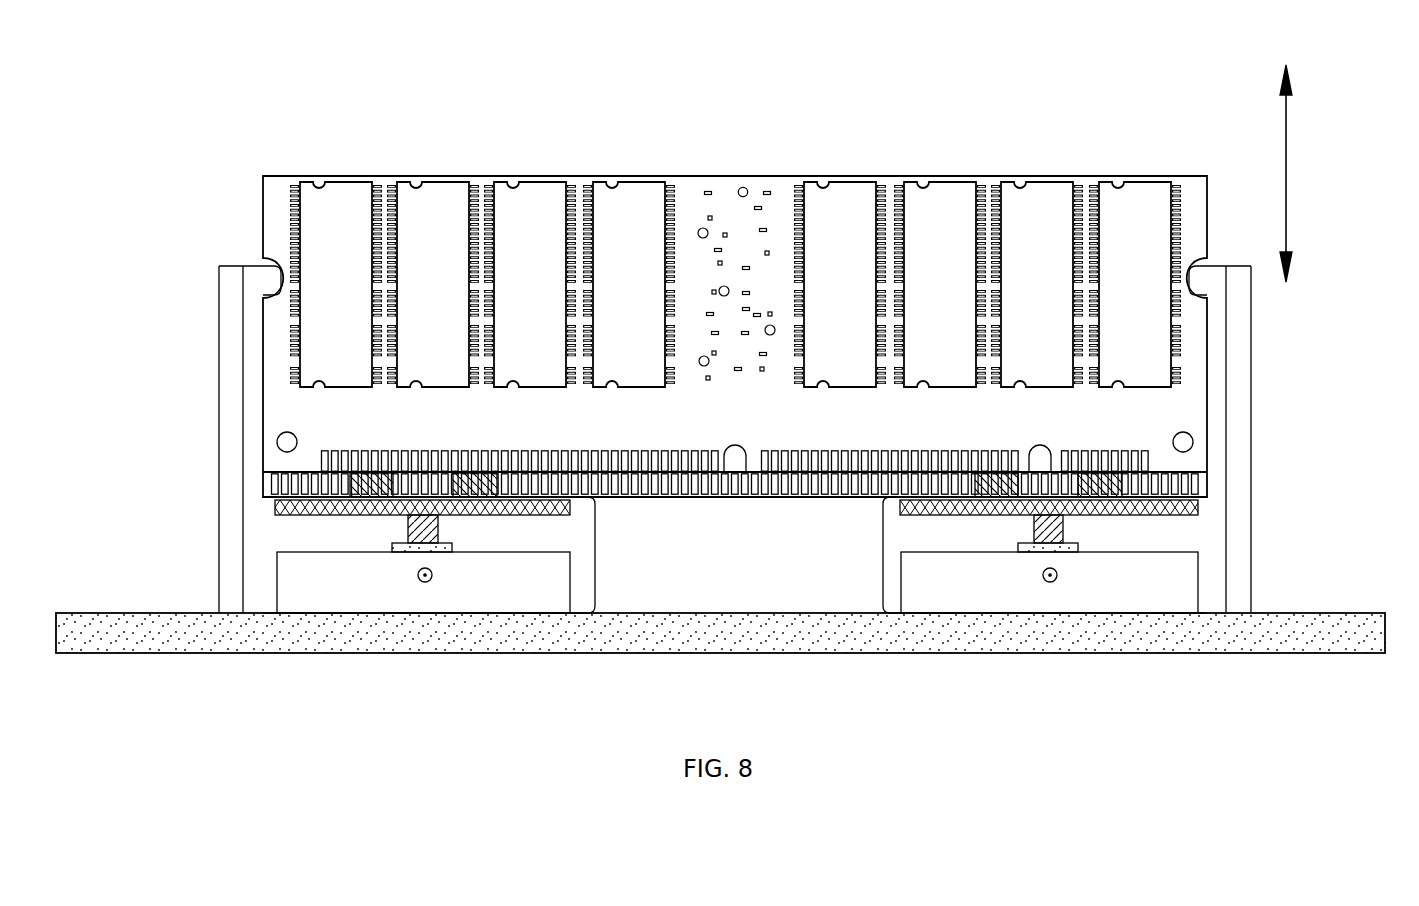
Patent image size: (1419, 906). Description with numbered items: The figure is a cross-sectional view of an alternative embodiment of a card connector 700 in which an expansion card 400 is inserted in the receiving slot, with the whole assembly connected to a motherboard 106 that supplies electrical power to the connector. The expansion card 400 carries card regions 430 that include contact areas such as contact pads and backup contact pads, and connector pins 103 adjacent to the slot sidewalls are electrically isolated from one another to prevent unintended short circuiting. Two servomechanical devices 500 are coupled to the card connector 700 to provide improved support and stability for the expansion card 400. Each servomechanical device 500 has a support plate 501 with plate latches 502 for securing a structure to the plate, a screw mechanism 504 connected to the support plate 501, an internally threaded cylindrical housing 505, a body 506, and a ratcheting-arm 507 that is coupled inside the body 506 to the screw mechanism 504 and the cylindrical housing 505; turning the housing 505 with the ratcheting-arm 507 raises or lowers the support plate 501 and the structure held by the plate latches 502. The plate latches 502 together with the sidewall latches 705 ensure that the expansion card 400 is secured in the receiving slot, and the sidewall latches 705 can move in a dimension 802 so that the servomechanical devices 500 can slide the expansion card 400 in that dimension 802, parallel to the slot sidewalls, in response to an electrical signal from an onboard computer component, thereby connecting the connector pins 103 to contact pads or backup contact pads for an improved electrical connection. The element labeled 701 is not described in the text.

The expansion card 400 is at (252, 180).
The card regions 430 is at (650, 456).
The connector pins 103 is at (762, 485).
The card connector 700 is at (205, 259).
The bracket arm 701 is at (230, 395).
The sidewall latches 705 is at (253, 337).
The plate latches 502 is at (455, 474).
The support plate 501 is at (275, 510).
The screw mechanism 504 is at (430, 530).
The internally threaded cylindrical housing 505 is at (393, 547).
The body 506 is at (288, 583).
The ratcheting-arm 507 is at (432, 576).
The servomechanical device 500 is at (595, 553).
The dimension 802 is at (1286, 167).
The motherboard 106 is at (168, 637).